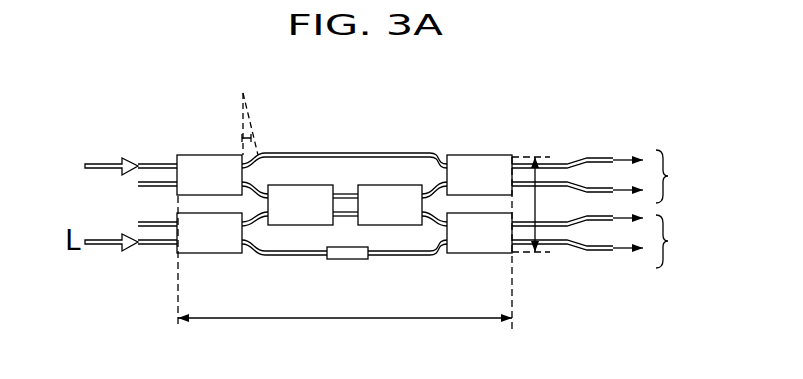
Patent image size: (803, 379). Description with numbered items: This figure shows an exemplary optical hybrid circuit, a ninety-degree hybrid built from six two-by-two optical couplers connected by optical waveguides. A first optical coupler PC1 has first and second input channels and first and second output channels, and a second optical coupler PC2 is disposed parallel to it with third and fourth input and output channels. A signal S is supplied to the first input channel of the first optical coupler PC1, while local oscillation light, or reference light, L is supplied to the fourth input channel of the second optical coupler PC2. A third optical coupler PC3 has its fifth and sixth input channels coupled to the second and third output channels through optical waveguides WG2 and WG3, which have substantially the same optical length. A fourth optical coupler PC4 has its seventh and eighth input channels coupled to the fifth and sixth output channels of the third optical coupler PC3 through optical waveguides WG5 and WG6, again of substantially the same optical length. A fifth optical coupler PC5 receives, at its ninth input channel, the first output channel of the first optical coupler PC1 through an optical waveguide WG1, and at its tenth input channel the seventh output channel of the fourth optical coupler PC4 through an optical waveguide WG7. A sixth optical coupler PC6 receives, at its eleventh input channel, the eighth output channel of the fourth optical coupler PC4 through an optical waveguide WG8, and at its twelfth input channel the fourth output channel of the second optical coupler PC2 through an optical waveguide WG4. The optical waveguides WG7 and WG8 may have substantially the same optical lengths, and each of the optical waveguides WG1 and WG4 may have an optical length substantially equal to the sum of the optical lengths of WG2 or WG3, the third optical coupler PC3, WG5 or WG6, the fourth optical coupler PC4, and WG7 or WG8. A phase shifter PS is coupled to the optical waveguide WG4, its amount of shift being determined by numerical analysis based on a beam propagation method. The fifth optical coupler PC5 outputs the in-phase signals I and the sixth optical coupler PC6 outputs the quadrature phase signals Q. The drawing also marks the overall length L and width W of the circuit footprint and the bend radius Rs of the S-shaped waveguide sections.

The first optical coupler PC1 is at (194, 155).
The second optical coupler PC2 is at (205, 253).
The third optical coupler PC3 is at (304, 185).
The fourth optical coupler PC4 is at (386, 185).
The fifth optical coupler PC5 is at (480, 155).
The sixth optical coupler PC6 is at (484, 253).
The optical waveguide WG1 is at (276, 153).
The optical waveguide WG2 is at (266, 181).
The optical waveguide WG3 is at (257, 247).
The optical waveguide WG4 is at (299, 257).
The optical waveguide WG5 is at (346, 194).
The optical waveguide WG6 is at (346, 218).
The optical waveguide WG7 is at (427, 166).
The optical waveguide WG8 is at (427, 246).
The phase shifter PS is at (365, 260).
The S-bend radius Rs is at (236, 124).
The signal S is at (121, 169).
The local oscillation light L is at (345, 256).
The width of optical hybrid W is at (541, 204).
The in-phase signals I is at (685, 190).
The quadrature phase signals Q is at (605, 241).